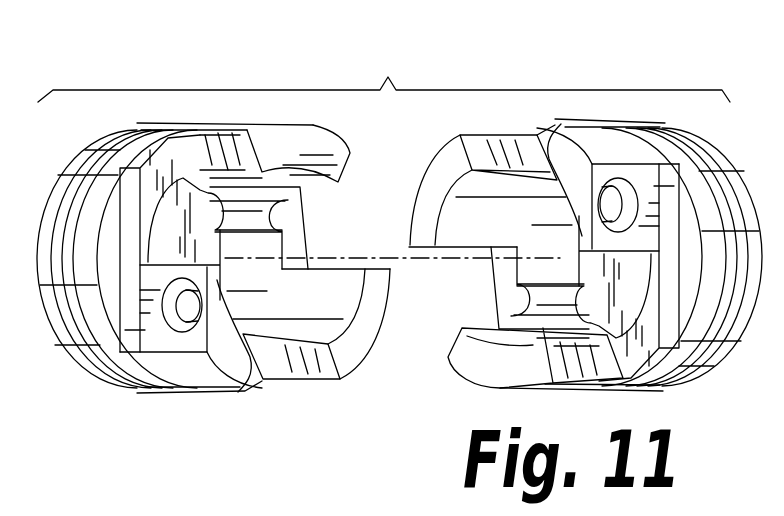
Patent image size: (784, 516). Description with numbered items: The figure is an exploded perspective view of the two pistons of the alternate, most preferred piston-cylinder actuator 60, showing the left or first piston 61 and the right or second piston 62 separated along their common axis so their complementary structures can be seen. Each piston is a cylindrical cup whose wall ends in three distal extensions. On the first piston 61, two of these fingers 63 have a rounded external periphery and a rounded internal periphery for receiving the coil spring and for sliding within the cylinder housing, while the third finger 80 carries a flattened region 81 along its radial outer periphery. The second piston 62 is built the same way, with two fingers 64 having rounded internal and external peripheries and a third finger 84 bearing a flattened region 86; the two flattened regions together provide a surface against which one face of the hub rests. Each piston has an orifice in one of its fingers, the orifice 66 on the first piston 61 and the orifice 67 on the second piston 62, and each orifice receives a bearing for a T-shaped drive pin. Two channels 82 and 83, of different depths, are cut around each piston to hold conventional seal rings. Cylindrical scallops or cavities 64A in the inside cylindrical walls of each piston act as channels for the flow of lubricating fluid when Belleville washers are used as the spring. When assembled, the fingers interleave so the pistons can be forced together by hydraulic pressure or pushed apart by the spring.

The piston-cylinder actuator 60 is at (384, 76).
The first piston 61 is at (147, 387).
The second piston 62 is at (683, 383).
The fingers 63 is at (287, 132).
The fingers 64 is at (500, 143).
The cylindrical scallops 64A is at (283, 228).
The orifice 66 is at (183, 335).
The orifice 67 is at (637, 180).
The finger 80 is at (235, 345).
The flattened region 81 is at (140, 400).
The channel 82 is at (136, 128).
The channel 83 is at (92, 148).
The third finger 84 is at (552, 150).
The flattened region 86 is at (665, 170).